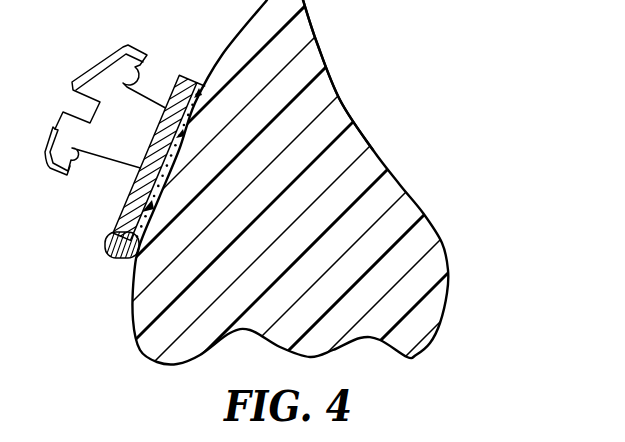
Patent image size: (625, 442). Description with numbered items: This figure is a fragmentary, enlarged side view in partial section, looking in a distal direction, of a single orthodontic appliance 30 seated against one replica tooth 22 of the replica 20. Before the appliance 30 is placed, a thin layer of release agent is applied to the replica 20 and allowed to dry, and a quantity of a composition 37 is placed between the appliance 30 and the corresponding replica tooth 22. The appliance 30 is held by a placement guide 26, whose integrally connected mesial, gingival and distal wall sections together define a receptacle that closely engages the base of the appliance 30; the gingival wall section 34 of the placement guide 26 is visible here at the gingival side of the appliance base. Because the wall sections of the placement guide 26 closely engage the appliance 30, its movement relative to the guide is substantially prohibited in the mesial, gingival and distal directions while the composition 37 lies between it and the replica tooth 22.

The replica 20 is at (401, 150).
The replica tooth 22 is at (313, 53).
The placement guide 26 is at (104, 245).
The orthodontic appliance 30 is at (98, 66).
The gingival wall section 34 is at (118, 257).
The composition 37 is at (197, 90).